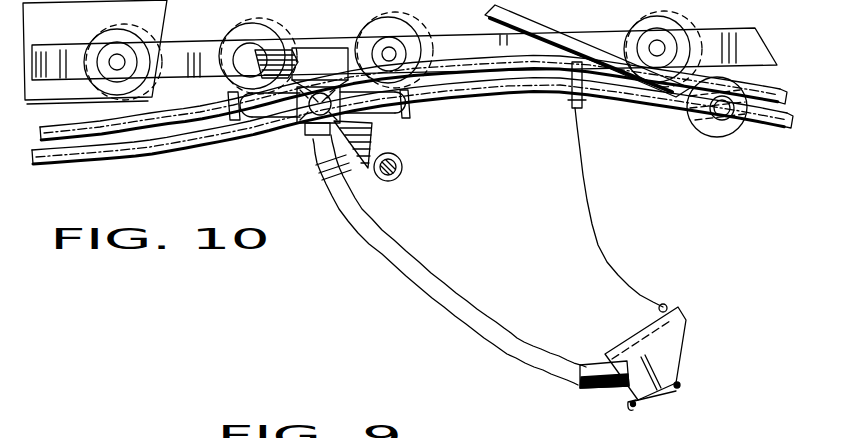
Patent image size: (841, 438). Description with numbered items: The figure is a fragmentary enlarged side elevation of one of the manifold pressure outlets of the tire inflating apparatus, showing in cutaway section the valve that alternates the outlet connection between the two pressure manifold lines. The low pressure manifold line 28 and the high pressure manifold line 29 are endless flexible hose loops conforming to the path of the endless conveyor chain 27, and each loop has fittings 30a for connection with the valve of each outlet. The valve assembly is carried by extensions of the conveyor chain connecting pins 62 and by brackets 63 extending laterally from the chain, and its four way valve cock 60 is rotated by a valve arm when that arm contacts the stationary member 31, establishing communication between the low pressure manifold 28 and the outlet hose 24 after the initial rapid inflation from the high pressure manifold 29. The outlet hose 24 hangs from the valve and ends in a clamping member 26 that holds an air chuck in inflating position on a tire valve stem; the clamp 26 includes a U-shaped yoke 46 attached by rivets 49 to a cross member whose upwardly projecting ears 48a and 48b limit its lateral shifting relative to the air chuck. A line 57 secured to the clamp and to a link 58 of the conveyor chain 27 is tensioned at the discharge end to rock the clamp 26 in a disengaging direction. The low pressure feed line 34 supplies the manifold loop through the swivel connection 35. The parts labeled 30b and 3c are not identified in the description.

The manifold outlet hose 24 is at (457, 300).
The clamping member 26 is at (667, 358).
The endless conveyor chain 27 is at (108, 37).
The low pressure manifold line 28 is at (188, 150).
The high pressure manifold line 29 is at (105, 133).
The manifold fittings 30a is at (230, 87).
The right pipe section 30b is at (413, 114).
The stationary member 31 is at (402, 168).
The low pressure feed line 34 is at (560, 37).
The swivel connection 35 is at (720, 127).
The hatched support block 3c is at (387, 132).
The U-shaped yoke 46 is at (615, 350).
The upwardly projecting ear 48a is at (633, 406).
The upwardly projecting ear 48b is at (681, 385).
The rivets 49 is at (660, 399).
The disengaging line 57 is at (593, 200).
The conveyor chain link 58 is at (583, 44).
The four way valve cock 60 is at (307, 128).
The conveyor chain connecting pins 62 is at (257, 57).
The brackets 63 is at (325, 55).